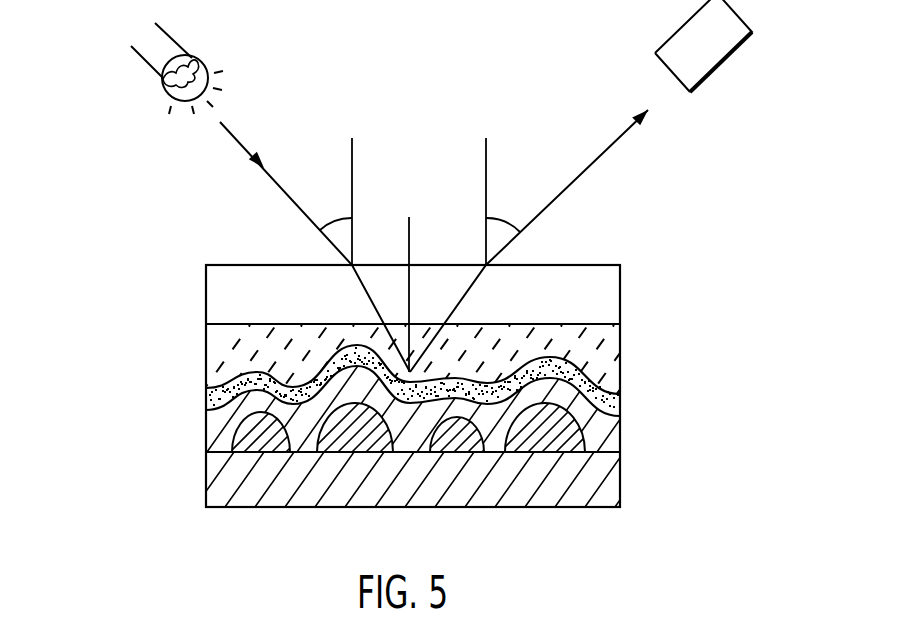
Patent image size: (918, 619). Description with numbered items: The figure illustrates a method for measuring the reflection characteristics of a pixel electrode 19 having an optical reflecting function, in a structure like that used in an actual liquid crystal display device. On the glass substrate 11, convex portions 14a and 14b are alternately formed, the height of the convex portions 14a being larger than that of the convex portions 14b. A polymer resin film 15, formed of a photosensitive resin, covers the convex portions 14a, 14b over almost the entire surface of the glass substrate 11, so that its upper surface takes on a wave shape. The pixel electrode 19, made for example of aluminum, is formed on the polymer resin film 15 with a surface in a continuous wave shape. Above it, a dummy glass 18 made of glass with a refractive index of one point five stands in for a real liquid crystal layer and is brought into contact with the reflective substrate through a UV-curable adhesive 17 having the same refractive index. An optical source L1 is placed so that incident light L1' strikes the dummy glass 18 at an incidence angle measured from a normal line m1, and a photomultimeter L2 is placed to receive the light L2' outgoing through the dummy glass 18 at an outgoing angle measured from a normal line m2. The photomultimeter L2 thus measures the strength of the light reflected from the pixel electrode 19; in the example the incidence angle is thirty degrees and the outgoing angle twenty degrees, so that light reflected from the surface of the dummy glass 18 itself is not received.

The glass substrate 11 is at (220, 473).
The convex portions 14a is at (353, 430).
The convex portions 14b is at (265, 430).
The polymer resin film 15 is at (217, 433).
The UV-curable adhesive 17 is at (218, 348).
The dummy glass 18 is at (218, 282).
The pixel electrode 19 is at (213, 403).
The optical source L1 is at (138, 68).
The incident light L1' is at (283, 247).
The photomultimeter L2 is at (725, 55).
The outgoing light L2' is at (561, 241).
The normal line m1 is at (352, 185).
The normal line m2 is at (487, 185).